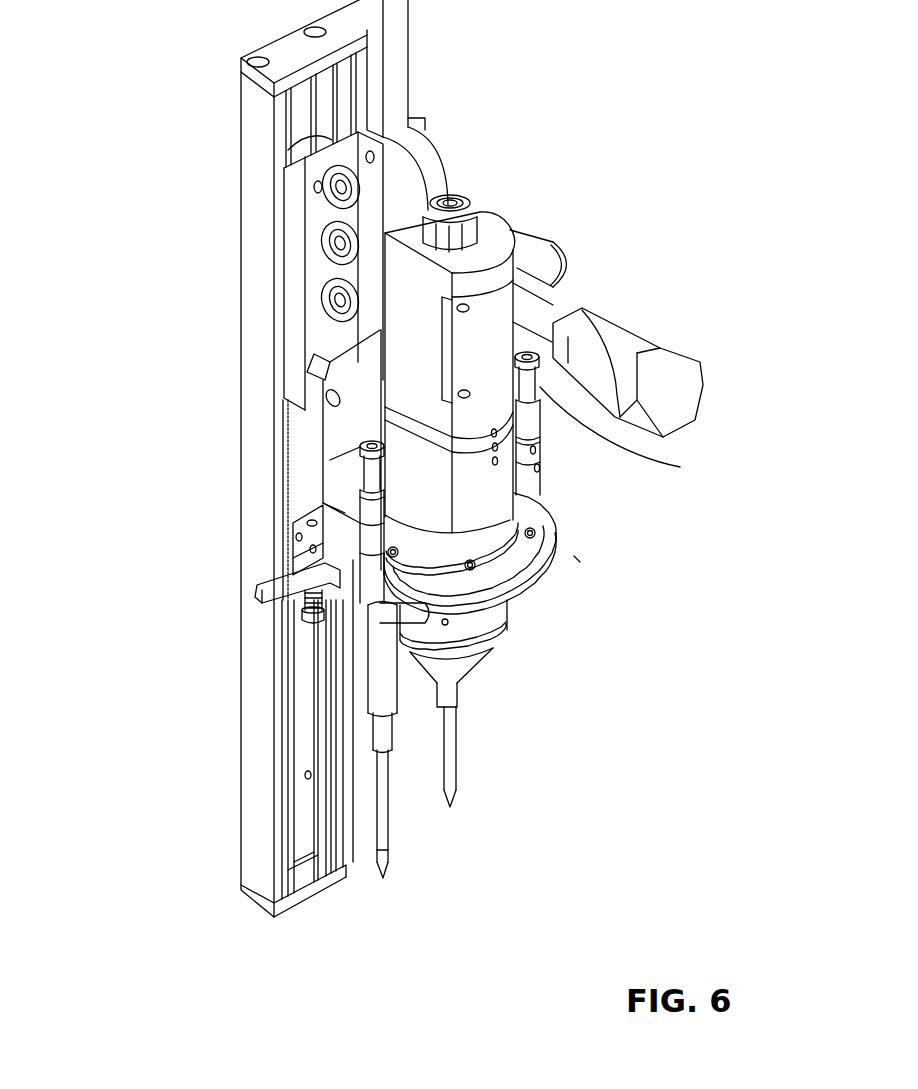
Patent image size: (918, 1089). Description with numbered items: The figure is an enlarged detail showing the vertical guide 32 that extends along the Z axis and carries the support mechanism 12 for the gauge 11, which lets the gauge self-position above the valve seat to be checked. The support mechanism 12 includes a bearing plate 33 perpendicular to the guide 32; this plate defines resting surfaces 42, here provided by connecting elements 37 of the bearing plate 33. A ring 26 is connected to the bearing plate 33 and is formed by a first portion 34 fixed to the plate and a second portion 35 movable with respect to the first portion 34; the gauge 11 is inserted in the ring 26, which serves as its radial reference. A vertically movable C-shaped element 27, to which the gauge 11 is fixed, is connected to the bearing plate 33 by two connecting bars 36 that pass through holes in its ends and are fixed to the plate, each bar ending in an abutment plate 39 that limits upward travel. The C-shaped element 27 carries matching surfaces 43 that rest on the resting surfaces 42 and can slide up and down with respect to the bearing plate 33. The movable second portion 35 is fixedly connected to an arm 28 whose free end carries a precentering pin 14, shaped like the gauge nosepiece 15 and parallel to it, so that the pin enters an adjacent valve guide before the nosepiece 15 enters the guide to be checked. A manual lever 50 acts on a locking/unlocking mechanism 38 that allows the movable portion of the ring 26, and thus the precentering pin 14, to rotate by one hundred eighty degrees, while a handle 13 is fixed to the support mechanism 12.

The gauge 11 is at (491, 235).
The support mechanism 12 is at (292, 477).
The handle 13 is at (662, 390).
The precentering pin 14 is at (383, 840).
The gauge nosepiece 15 is at (492, 608).
The ring 26 is at (566, 550).
The C-shaped element 27 is at (333, 437).
The arm 28 is at (386, 680).
The guide 32 is at (248, 142).
The bearing plate 33 is at (328, 527).
The first portion 34 is at (531, 519).
The second portion 35 is at (531, 578).
The connecting bars 36 is at (342, 463).
The connecting elements 37 is at (343, 480).
The locking/unlocking mechanism 38 is at (292, 617).
The abutment plate 39 is at (680, 467).
The resting surfaces 42 is at (336, 513).
The matching surfaces 43 is at (355, 524).
The manual lever 50 is at (318, 576).